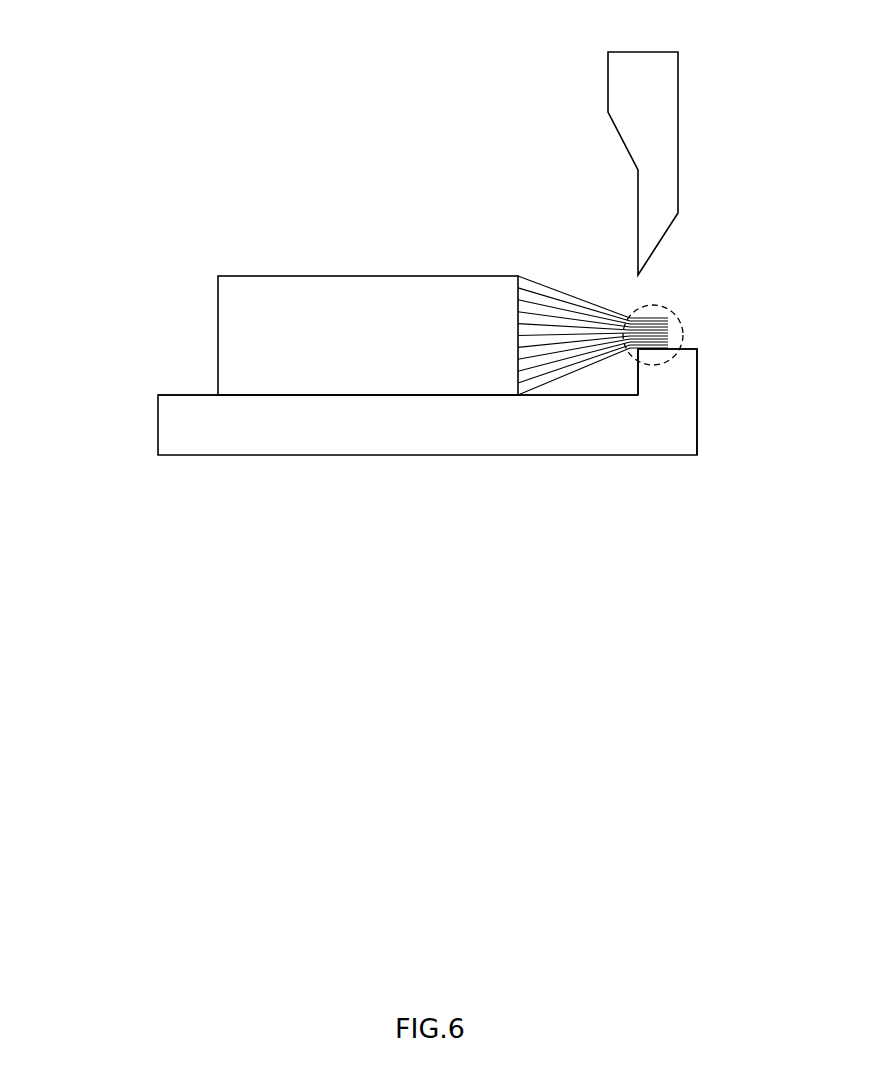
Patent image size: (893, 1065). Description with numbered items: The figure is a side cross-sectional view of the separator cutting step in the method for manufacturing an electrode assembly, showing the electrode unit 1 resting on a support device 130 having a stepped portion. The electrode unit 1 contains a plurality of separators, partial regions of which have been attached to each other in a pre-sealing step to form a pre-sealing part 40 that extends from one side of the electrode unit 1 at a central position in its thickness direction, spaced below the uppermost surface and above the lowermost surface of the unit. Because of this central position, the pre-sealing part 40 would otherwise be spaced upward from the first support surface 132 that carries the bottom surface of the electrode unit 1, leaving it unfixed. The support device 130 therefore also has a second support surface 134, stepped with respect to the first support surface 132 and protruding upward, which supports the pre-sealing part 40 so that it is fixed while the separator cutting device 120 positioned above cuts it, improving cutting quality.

The electrode unit 1 is at (378, 216).
The pre-sealing part 40 is at (676, 313).
The separator cutting device 120 is at (678, 160).
The support device 130 is at (133, 427).
The first support surface 132 is at (177, 395).
The second support surface 134 is at (690, 349).